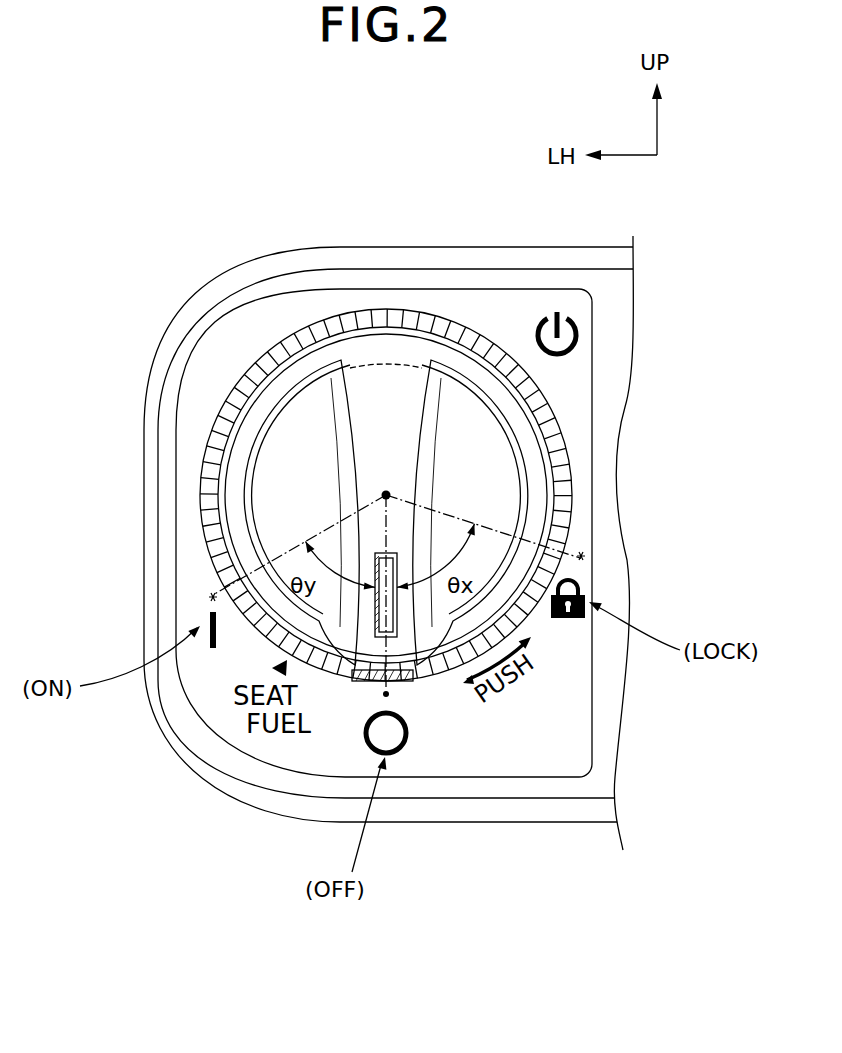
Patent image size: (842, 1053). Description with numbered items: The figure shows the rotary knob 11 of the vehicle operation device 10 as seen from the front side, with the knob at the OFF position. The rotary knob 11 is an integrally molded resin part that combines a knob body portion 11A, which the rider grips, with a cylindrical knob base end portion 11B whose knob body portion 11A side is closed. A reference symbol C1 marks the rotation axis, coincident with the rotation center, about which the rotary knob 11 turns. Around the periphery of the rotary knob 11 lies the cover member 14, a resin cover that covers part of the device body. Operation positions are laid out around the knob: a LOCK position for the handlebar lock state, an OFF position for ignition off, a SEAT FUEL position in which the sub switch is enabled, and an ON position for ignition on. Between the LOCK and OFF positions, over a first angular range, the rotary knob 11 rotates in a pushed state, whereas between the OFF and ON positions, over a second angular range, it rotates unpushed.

The vehicle operation device 10 is at (153, 232).
The cover member 14 is at (386, 288).
The rotary knob 11 is at (248, 393).
The knob body portion 11A is at (378, 456).
The knob base end portion 11B is at (228, 518).
The rotation axis C1 is at (385, 479).